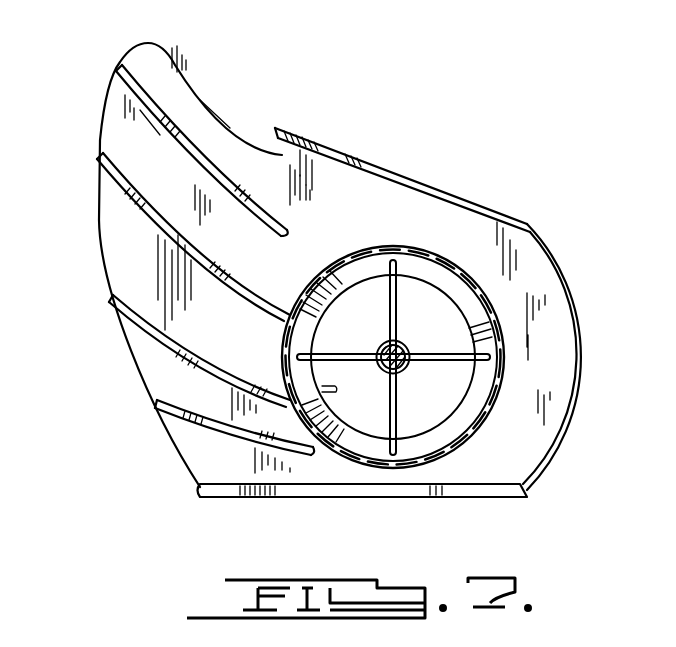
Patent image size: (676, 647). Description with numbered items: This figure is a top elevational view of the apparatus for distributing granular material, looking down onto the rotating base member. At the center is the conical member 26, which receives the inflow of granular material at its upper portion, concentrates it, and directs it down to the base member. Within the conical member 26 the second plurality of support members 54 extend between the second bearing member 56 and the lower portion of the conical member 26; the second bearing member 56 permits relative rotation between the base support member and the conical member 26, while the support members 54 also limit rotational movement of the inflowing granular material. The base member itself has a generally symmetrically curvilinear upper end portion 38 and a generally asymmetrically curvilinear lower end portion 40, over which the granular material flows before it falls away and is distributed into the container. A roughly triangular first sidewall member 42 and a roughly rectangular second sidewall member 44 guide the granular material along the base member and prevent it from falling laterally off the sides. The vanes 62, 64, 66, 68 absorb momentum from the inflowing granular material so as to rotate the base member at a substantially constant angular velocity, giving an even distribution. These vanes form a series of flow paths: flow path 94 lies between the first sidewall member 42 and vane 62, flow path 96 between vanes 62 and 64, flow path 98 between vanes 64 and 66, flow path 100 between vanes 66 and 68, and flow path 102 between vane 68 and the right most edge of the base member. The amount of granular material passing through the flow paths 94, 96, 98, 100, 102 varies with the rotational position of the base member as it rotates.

The conical member 26 is at (430, 438).
The upper end portion 38 is at (526, 268).
The lower end portion 40 is at (100, 273).
The first sidewall member 42 is at (327, 147).
The second sidewall member 44 is at (278, 497).
The second plurality of support members 54 is at (395, 303).
The second bearing member 56 is at (407, 370).
The vane 62 is at (143, 52).
The vane 64 is at (117, 193).
The vane 66 is at (147, 333).
The vane 68 is at (213, 433).
The flow path 94 is at (193, 119).
The flow path 96 is at (142, 153).
The flow path 98 is at (142, 262).
The flow path 100 is at (180, 385).
The flow path 102 is at (237, 462).